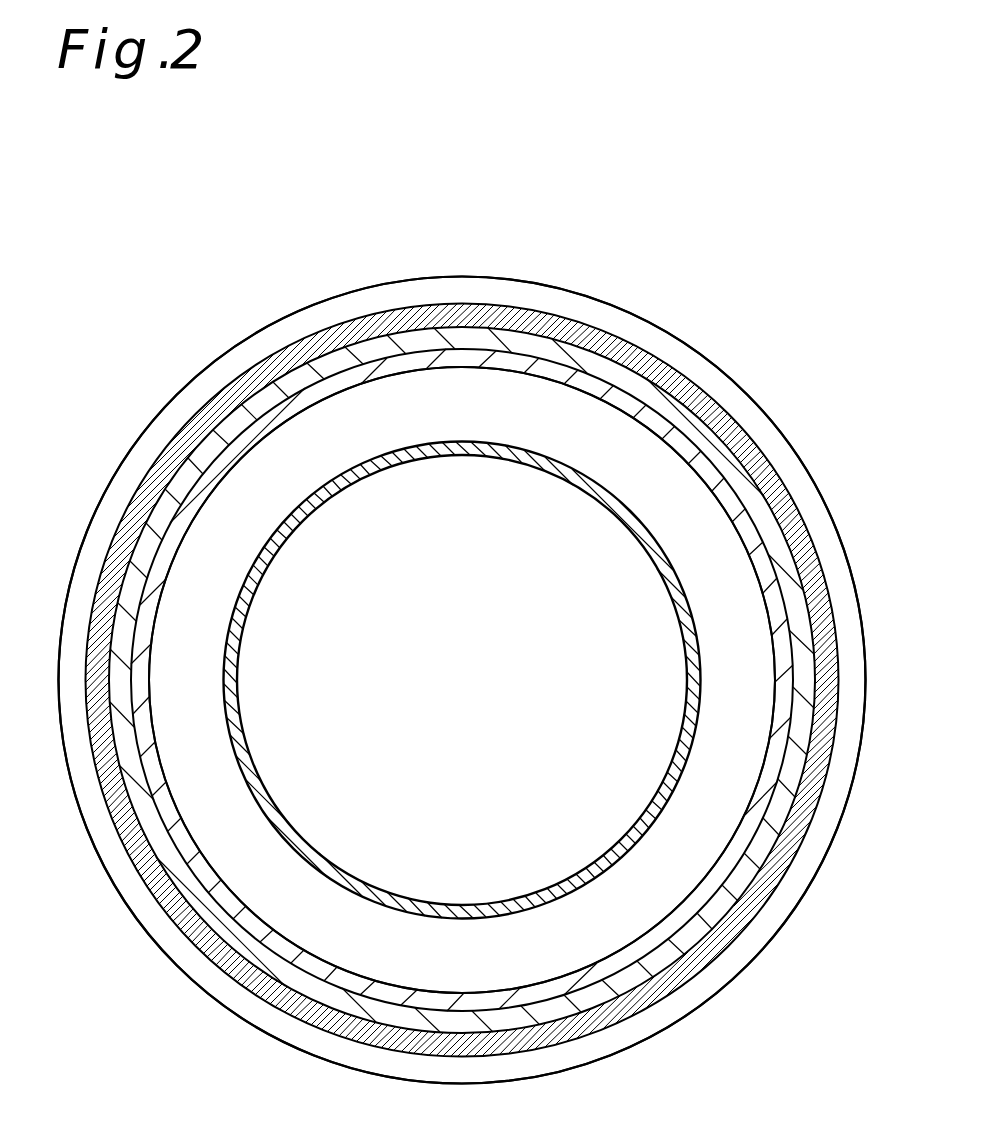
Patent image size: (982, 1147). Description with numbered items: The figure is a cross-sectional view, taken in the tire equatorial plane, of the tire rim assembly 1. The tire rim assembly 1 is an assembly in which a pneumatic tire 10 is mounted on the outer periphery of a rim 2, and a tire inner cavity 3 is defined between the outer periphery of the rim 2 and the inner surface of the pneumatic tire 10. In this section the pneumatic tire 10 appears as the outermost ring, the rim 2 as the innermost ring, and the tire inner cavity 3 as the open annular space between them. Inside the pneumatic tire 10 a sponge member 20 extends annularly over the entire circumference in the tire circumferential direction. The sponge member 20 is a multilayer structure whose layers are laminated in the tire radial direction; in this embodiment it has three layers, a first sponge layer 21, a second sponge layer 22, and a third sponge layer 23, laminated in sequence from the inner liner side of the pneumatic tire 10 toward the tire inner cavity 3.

The tire rim assembly 1 is at (719, 332).
The pneumatic tire 10 is at (179, 992).
The rim 2 is at (280, 541).
The tire inner cavity 3 is at (301, 454).
The sponge member 20 is at (462, 680).
The first sponge layer 21 is at (207, 638).
The second sponge layer 22 is at (118, 699).
The third sponge layer 23 is at (146, 643).